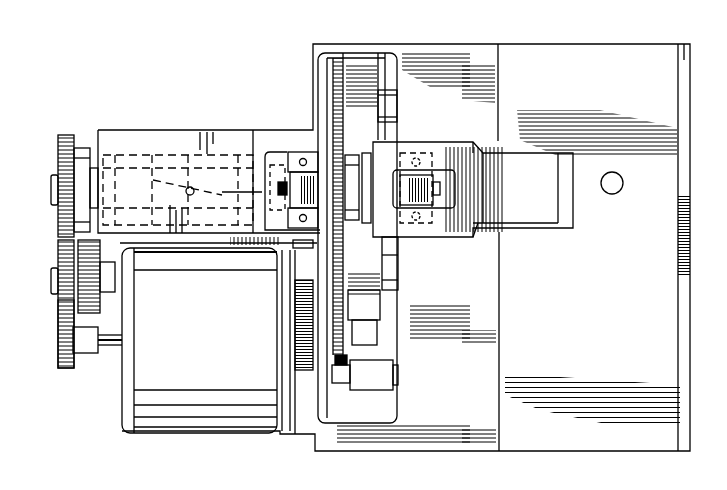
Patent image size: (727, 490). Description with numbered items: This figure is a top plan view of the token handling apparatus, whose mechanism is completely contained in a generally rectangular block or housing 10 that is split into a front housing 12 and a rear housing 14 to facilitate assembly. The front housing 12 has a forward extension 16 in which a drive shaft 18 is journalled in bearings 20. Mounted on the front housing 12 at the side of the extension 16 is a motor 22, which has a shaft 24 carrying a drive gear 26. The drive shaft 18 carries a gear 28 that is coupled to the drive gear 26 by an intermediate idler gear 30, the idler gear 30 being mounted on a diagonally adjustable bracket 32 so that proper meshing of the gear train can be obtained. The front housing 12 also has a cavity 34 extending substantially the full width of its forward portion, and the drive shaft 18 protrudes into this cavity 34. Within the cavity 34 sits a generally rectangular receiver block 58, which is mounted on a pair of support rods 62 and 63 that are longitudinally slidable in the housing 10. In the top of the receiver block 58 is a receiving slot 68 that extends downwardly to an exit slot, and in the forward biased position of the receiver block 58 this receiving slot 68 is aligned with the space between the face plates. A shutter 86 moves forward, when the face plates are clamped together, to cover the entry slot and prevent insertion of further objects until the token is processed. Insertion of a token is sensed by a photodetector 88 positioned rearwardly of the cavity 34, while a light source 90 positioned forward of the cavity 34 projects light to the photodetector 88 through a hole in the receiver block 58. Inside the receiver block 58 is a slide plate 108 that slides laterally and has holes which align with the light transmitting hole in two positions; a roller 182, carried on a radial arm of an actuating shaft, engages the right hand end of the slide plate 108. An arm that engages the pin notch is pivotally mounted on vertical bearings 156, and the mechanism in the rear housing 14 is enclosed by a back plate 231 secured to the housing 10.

The housing 10 is at (473, 454).
The front housing 12 is at (387, 440).
The rear housing 14 is at (658, 337).
The forward extension 16 is at (130, 132).
The drive shaft 18 is at (178, 157).
The bearings 20 is at (150, 185).
The motor 22 is at (148, 398).
The shaft 24 is at (107, 353).
The drive gear 26 is at (58, 342).
The gear 28 is at (62, 135).
The idler gear 30 is at (60, 253).
The diagonally adjustable bracket 32 is at (95, 285).
The cavity 34 is at (345, 415).
The receiver block 58 is at (362, 62).
The support rod 62 is at (393, 263).
The support rod 63 is at (388, 105).
The receiving slot 68 is at (364, 228).
The shutter 86 is at (380, 177).
The photodetector 88 is at (283, 172).
The light source 90 is at (437, 188).
The slide plate 108 is at (338, 92).
The vertical bearings 156 is at (618, 192).
The roller 182 is at (340, 365).
The back plate 231 is at (681, 42).